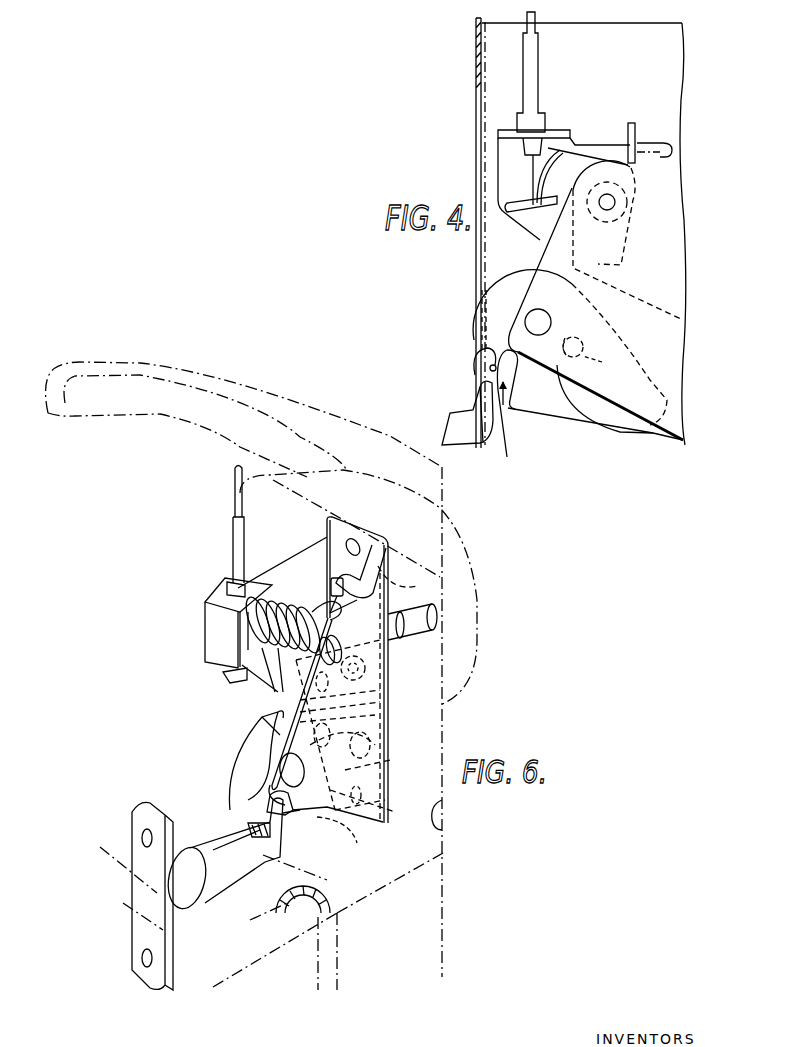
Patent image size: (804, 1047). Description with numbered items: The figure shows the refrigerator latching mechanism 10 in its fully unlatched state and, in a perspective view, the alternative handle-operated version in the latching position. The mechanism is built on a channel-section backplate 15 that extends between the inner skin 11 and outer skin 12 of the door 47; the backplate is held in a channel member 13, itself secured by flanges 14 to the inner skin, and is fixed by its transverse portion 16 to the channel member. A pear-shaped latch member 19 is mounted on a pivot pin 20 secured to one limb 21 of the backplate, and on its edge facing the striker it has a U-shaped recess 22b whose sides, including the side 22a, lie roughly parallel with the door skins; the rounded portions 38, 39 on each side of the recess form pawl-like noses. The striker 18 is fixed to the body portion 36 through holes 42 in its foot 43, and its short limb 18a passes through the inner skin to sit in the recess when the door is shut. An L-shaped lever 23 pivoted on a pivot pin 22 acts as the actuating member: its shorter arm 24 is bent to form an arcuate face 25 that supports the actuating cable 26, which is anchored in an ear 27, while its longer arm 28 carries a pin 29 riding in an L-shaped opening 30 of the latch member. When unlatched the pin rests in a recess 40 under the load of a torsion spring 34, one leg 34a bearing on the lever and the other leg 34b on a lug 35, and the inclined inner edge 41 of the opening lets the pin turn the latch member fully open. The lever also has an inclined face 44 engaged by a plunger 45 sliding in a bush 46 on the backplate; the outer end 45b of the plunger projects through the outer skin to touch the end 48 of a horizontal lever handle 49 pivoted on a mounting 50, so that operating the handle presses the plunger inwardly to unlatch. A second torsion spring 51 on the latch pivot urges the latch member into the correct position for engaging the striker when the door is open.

In FIG. 4, the latching mechanism 10 is at (592, 435).
In FIG. 6, the latching mechanism 10 is at (202, 660).
In FIG. 4, the inner skin 11 is at (476, 33).
In FIG. 6, the inner skin 11 is at (225, 888).
In FIG. 6, the outer skin 12 is at (445, 803).
In FIG. 4, the channel member 13 is at (500, 50).
In FIG. 4, the flanges 14 is at (483, 92).
In FIG. 4, the backplate 15 is at (647, 182).
In FIG. 6, the backplate 15 is at (387, 712).
In FIG. 6, the transverse portion 16 is at (323, 523).
In FIG. 4, the striker 18 is at (463, 430).
In FIG. 6, the striker 18 is at (228, 868).
In FIG. 4, the short limb 18a is at (482, 400).
In FIG. 6, the short limb 18a is at (270, 857).
In FIG. 4, the latch member 19 is at (559, 413).
In FIG. 6, the latch member 19 is at (240, 753).
In FIG. 4, the pivot pin 20 is at (552, 299).
In FIG. 6, the pivot pin 20 is at (275, 785).
In FIG. 6, the limb 21 is at (290, 733).
In FIG. 4, the pivot pin 22 is at (615, 202).
In FIG. 6, the pivot pin 22 is at (323, 636).
In FIG. 4, the side 22a is at (493, 360).
In FIG. 4, the U-shaped recess 22b is at (512, 452).
In FIG. 6, the U-shaped recess 22b is at (268, 802).
In FIG. 4, the lever 23 is at (620, 262).
In FIG. 6, the lever 23 is at (290, 687).
In FIG. 6, the shorter arm 24 is at (245, 628).
In FIG. 6, the arcuate face 25 is at (248, 648).
In FIG. 6, the actuating cable 26 is at (205, 605).
In FIG. 6, the ear 27 is at (228, 675).
In FIG. 6, the longer arm 28 is at (392, 722).
In FIG. 4, the pin 29 is at (577, 339).
In FIG. 6, the pin 29 is at (393, 760).
In FIG. 6, the opening 30 is at (388, 773).
In FIG. 6, the torsion spring 34 is at (285, 593).
In FIG. 6, the leg 34a is at (287, 688).
In FIG. 6, the leg 34b is at (337, 578).
In FIG. 6, the lug 35 is at (363, 557).
In FIG. 6, the body portion 36 is at (320, 948).
In FIG. 4, the portion 38 is at (517, 407).
In FIG. 6, the portion 38 is at (302, 820).
In FIG. 4, the portion 39 is at (490, 368).
In FIG. 6, the portion 39 is at (247, 827).
In FIG. 4, the recess 40 is at (600, 362).
In FIG. 6, the recess 40 is at (282, 773).
In FIG. 4, the inner edge 41 is at (545, 358).
In FIG. 6, the inner edge 41 is at (305, 811).
In FIG. 6, the holes 42 is at (143, 843).
In FIG. 6, the foot 43 is at (143, 813).
In FIG. 6, the inclined face 44 is at (345, 702).
In FIG. 6, the plunger 45 is at (393, 683).
In FIG. 6, the outer end 45b is at (437, 615).
In FIG. 6, the bush 46 is at (470, 670).
In FIG. 6, the door 47 is at (400, 905).
In FIG. 6, the end 48 is at (407, 587).
In FIG. 6, the lever handle 49 is at (181, 407).
In FIG. 6, the mounting 50 is at (318, 487).
In FIG. 6, the torsion spring 51 is at (351, 835).